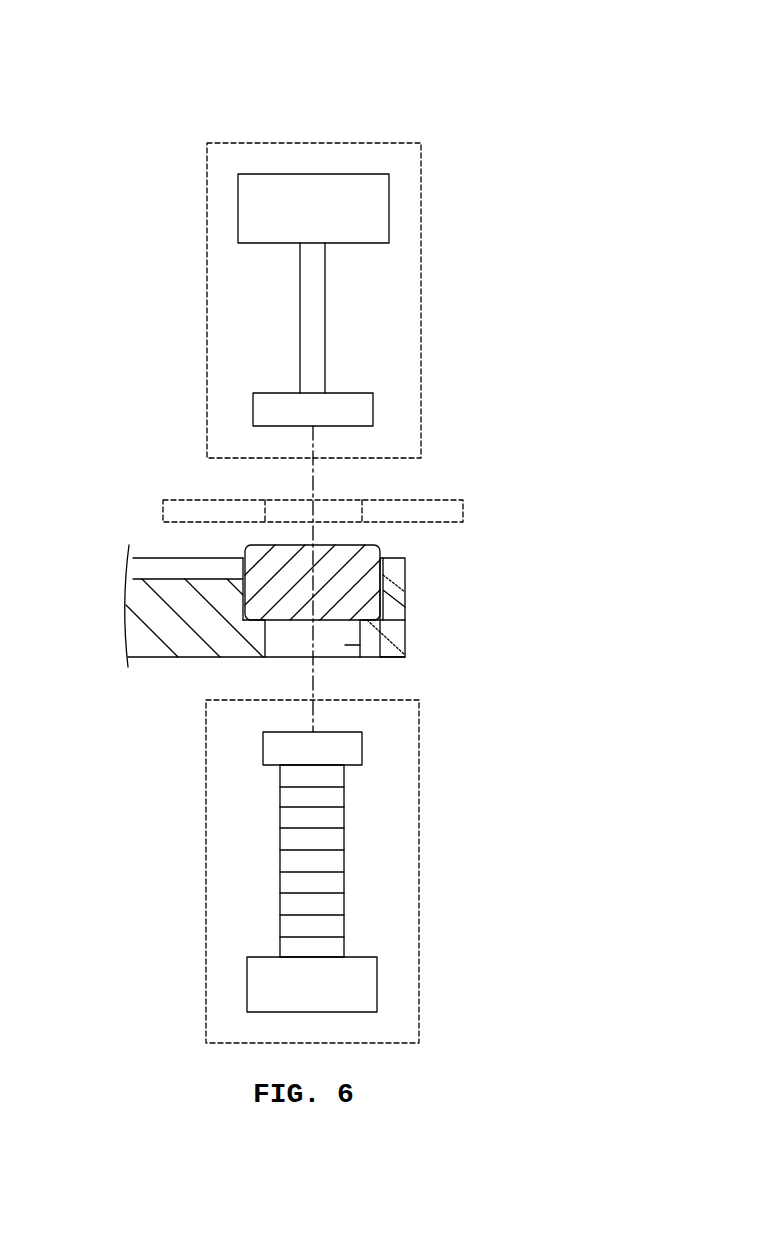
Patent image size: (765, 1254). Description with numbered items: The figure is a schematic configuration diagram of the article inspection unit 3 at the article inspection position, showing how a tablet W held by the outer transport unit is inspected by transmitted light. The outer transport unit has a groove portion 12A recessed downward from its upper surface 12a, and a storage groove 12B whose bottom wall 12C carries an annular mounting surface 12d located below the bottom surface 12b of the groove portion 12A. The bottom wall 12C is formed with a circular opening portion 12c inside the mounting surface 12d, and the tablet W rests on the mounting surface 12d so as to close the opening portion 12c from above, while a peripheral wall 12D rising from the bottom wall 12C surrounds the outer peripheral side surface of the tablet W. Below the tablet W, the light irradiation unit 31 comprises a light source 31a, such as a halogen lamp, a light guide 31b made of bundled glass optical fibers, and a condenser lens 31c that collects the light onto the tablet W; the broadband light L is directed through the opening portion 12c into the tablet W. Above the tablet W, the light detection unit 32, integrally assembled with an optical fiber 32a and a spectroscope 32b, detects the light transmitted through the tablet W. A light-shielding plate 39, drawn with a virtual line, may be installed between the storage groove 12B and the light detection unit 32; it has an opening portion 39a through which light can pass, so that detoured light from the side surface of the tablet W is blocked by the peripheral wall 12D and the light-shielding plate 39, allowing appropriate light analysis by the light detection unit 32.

The article inspection unit 3 is at (390, 96).
The broadband light L is at (310, 667).
The light detection unit 32 is at (370, 300).
The optical fiber 32a is at (316, 307).
The spectroscope 32b is at (277, 237).
The light-shielding plate 39 is at (365, 491).
The opening portion 39a is at (350, 510).
The tablet W is at (350, 556).
The upper surface 12a is at (148, 557).
The groove portion 12A is at (176, 577).
The bottom surface 12b is at (216, 578).
The mounting surface 12d is at (256, 607).
The storage groove 12B is at (344, 614).
The peripheral wall 12D is at (390, 602).
The bottom wall 12C is at (410, 638).
The opening portion 12c is at (346, 640).
The light irradiation unit 31 is at (369, 871).
The light source 31a is at (357, 985).
The light guide 31b is at (322, 862).
The condenser lens 31c is at (350, 748).